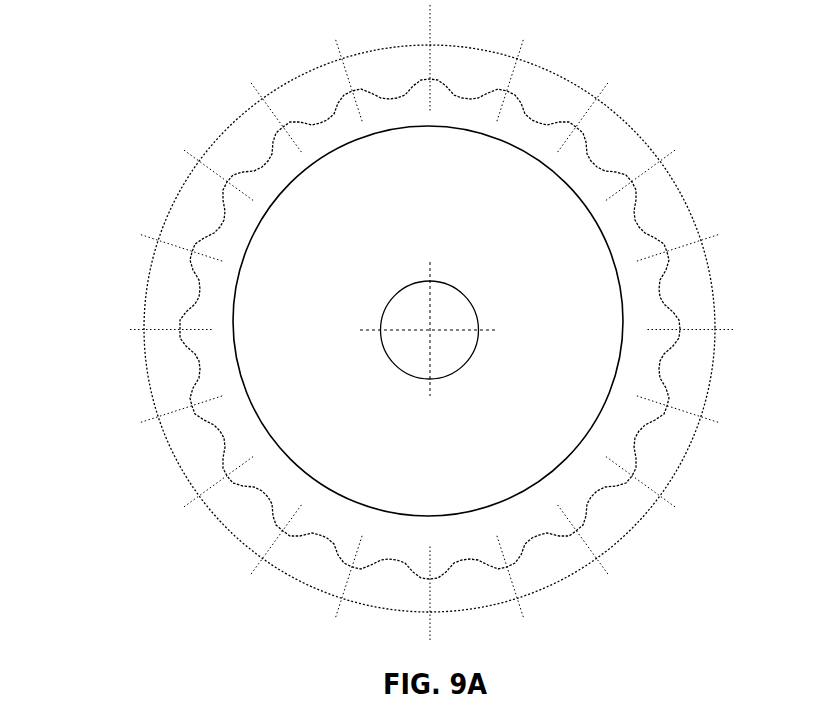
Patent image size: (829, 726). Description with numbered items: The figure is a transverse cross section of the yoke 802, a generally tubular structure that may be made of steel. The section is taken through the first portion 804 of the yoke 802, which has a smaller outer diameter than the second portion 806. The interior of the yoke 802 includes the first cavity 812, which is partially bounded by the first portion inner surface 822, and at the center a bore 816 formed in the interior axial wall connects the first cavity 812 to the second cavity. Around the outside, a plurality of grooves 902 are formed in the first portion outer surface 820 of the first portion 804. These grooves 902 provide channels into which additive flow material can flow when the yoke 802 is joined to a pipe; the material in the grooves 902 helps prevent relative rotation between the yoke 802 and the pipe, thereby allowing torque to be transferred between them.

The yoke 802 is at (132, 50).
The first portion 804 is at (232, 228).
The second portion 806 is at (636, 128).
The first cavity 812 is at (548, 237).
The bore 816 is at (412, 307).
The first portion outer surface 820 is at (222, 466).
The first portion inner surface 822 is at (596, 418).
The grooves 902 is at (196, 291).